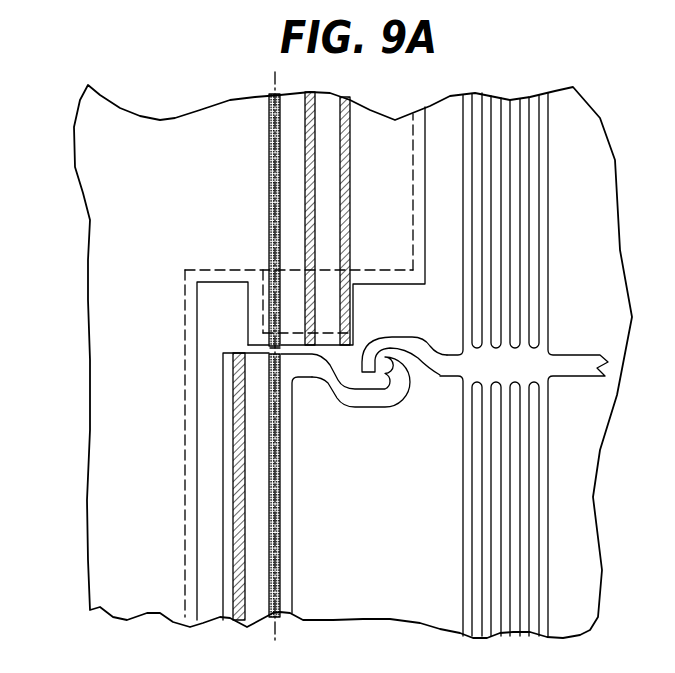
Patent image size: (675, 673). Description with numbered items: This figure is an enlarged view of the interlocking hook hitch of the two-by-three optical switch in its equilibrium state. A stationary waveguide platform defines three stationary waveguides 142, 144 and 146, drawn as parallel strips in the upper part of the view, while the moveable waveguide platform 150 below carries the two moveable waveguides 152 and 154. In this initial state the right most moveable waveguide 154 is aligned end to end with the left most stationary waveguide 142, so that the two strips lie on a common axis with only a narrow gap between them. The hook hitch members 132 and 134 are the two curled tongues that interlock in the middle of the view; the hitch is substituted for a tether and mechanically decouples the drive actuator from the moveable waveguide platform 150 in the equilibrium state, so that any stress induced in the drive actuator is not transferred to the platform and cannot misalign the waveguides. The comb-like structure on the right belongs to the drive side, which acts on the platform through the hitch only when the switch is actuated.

The hook hitch member 132 is at (388, 337).
The hook hitch member 134 is at (398, 390).
The stationary waveguide 142 is at (268, 242).
The stationary waveguide 144 is at (315, 242).
The stationary waveguide 146 is at (376, 176).
The moveable waveguide platform 150 is at (292, 533).
The moveable waveguide 152 is at (236, 362).
The moveable waveguide 154 is at (282, 466).